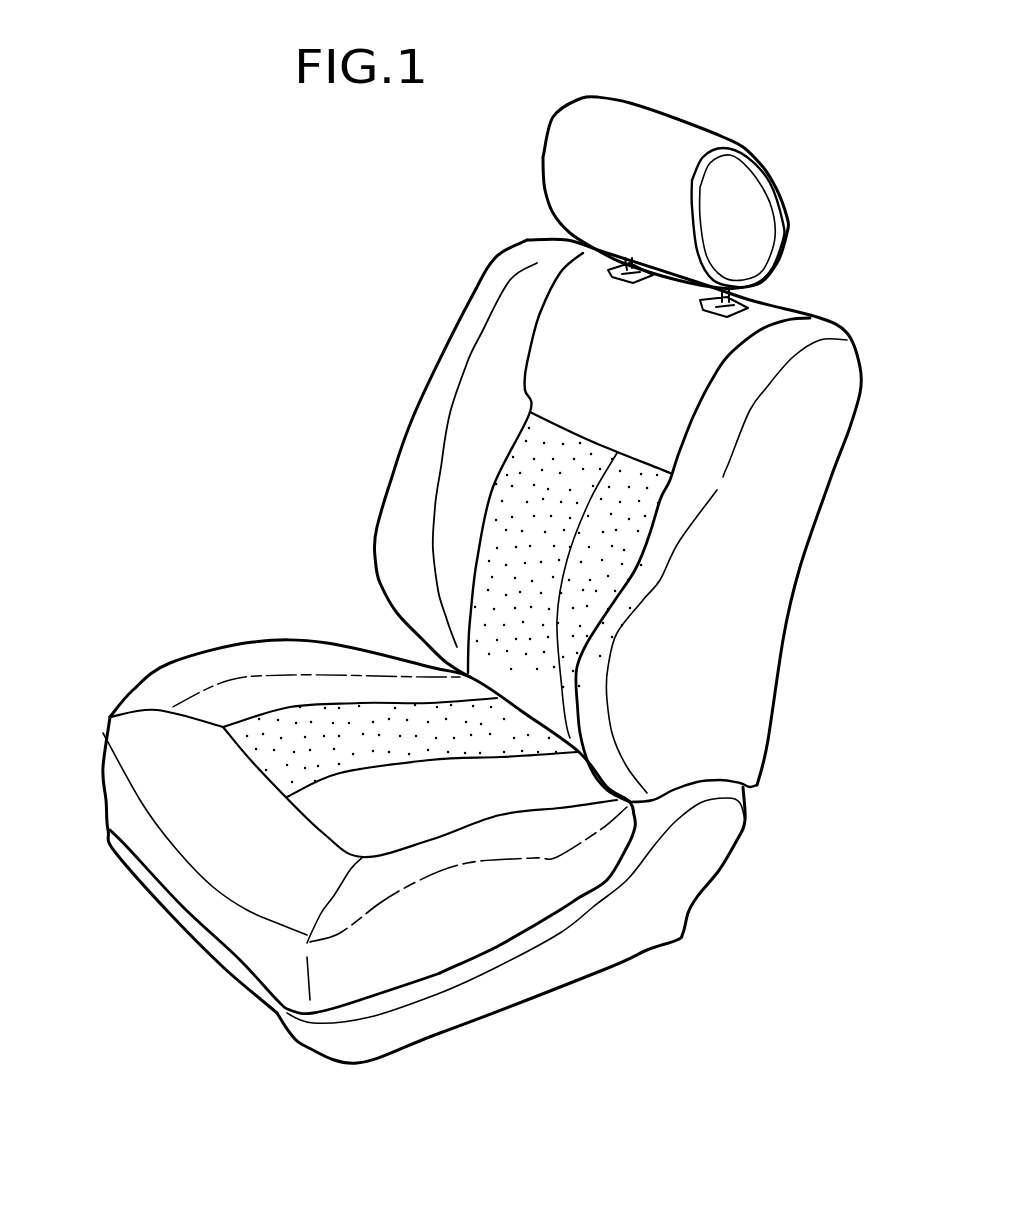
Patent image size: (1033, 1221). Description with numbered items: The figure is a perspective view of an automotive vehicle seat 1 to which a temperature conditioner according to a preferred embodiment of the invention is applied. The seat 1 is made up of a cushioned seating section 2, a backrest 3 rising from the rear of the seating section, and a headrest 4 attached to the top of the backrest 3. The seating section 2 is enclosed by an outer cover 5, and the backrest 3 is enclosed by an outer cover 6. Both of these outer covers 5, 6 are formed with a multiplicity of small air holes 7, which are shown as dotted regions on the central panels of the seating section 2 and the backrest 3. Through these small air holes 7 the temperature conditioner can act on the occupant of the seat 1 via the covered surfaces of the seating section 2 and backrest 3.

The automotive vehicle seat 1 is at (290, 270).
The cushioned seating section 2 is at (170, 663).
The backrest 3 is at (470, 300).
The headrest 4 is at (673, 130).
The outer cover 5 is at (272, 662).
The outer cover 6 is at (417, 448).
The small air holes 7 is at (603, 563).